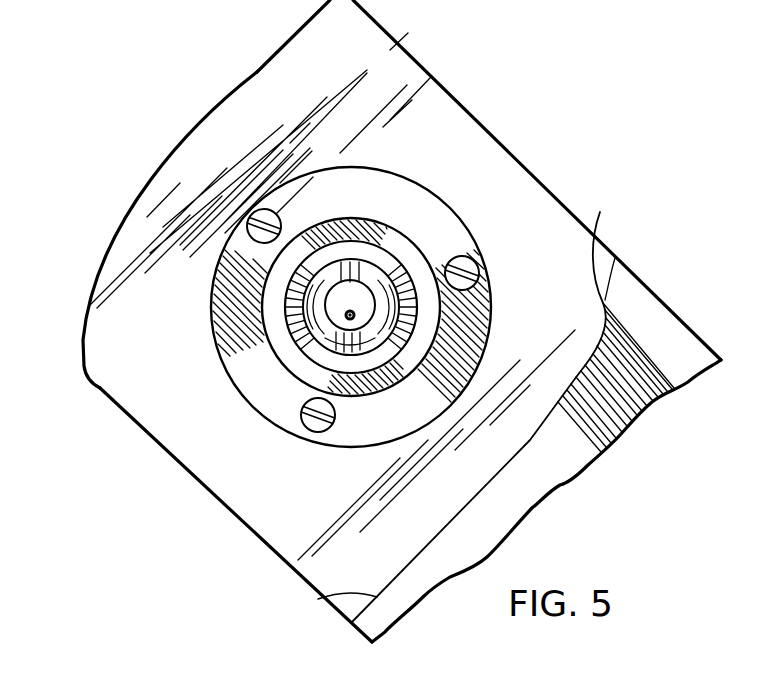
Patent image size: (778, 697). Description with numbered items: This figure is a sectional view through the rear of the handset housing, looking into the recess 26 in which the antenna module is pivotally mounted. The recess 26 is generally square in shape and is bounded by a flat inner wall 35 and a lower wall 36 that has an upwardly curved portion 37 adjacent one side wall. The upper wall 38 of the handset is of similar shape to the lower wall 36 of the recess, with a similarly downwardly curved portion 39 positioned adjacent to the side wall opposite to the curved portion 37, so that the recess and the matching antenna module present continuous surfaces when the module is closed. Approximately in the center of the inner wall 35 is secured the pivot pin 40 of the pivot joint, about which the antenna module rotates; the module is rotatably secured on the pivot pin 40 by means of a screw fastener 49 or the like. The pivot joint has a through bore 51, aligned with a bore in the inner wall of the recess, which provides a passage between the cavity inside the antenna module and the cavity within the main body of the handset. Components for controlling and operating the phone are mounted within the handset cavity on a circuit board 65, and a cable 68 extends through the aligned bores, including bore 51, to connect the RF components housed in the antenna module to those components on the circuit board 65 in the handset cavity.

The recess 26 is at (324, 497).
The flat inner wall 35 is at (413, 91).
The lower wall 36 is at (318, 599).
The upwardly curved portion 37 is at (513, 402).
The upper wall 38 is at (259, 73).
The downwardly curved portion 39 is at (87, 297).
The pivot pin 40 is at (332, 353).
The screw fastener 49 is at (327, 328).
The through bore 51 is at (351, 290).
The circuit board 65 is at (51, 8).
The cable 68 is at (352, 312).